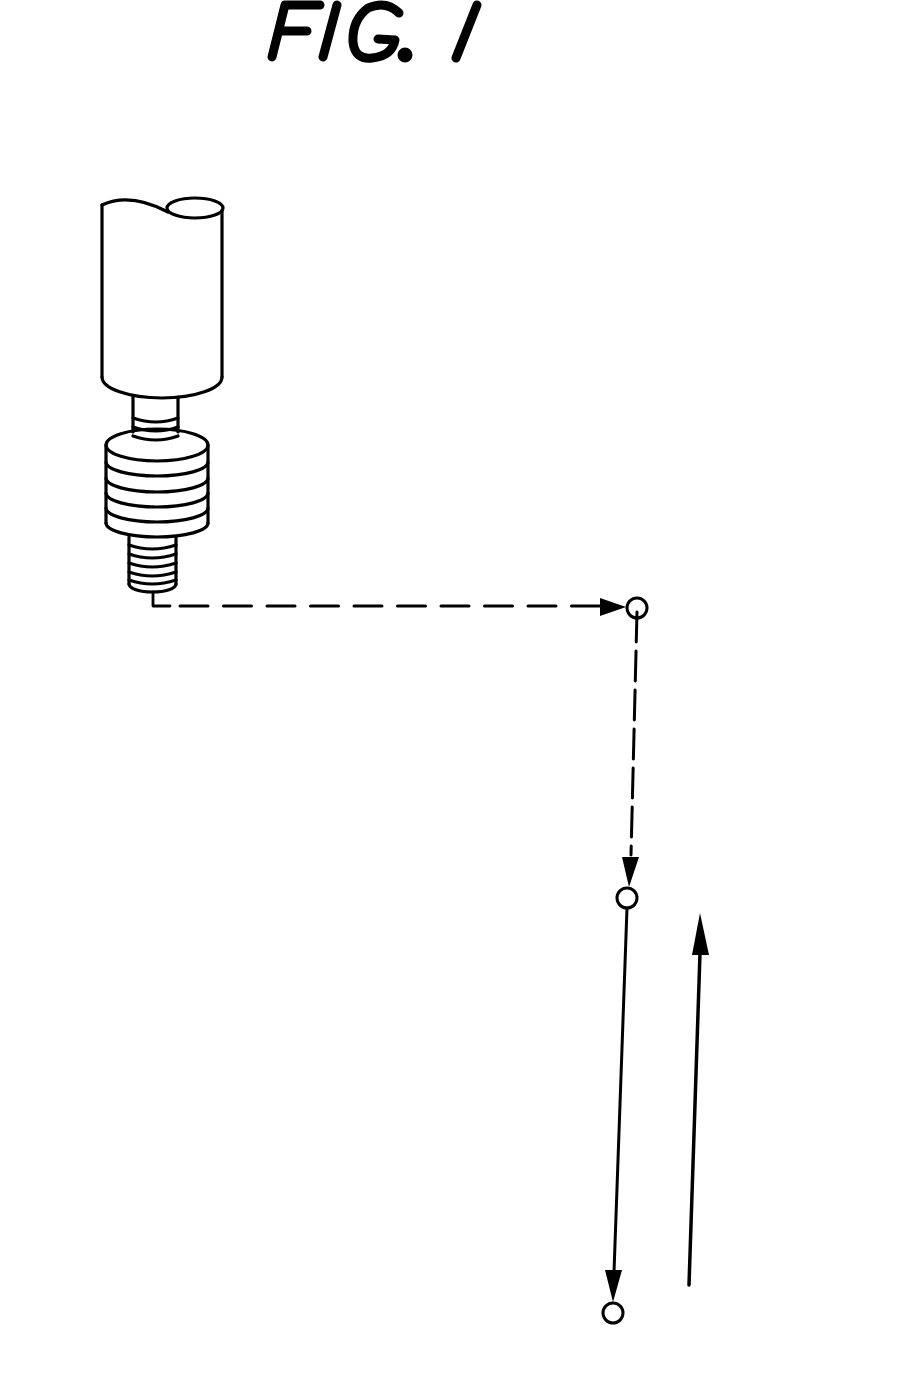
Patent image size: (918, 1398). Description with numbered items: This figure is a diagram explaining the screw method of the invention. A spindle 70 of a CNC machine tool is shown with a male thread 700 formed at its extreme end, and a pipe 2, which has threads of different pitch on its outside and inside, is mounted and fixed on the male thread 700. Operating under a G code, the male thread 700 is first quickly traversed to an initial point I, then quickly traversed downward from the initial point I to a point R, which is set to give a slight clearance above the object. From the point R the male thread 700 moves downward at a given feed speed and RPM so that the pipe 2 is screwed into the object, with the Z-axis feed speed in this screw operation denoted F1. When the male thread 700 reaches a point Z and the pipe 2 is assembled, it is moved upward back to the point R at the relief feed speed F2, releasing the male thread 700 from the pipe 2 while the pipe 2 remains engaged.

The spindle 70 is at (223, 307).
The pipe 2 is at (210, 470).
The male thread 700 is at (177, 560).
The initial point I is at (648, 602).
The point R is at (612, 897).
The point Z is at (600, 1315).
The feed speed of the Z-axis in the screw operation F1 is at (591, 1105).
The feed speed of the Z-axis in the relief operation F2 is at (732, 1099).